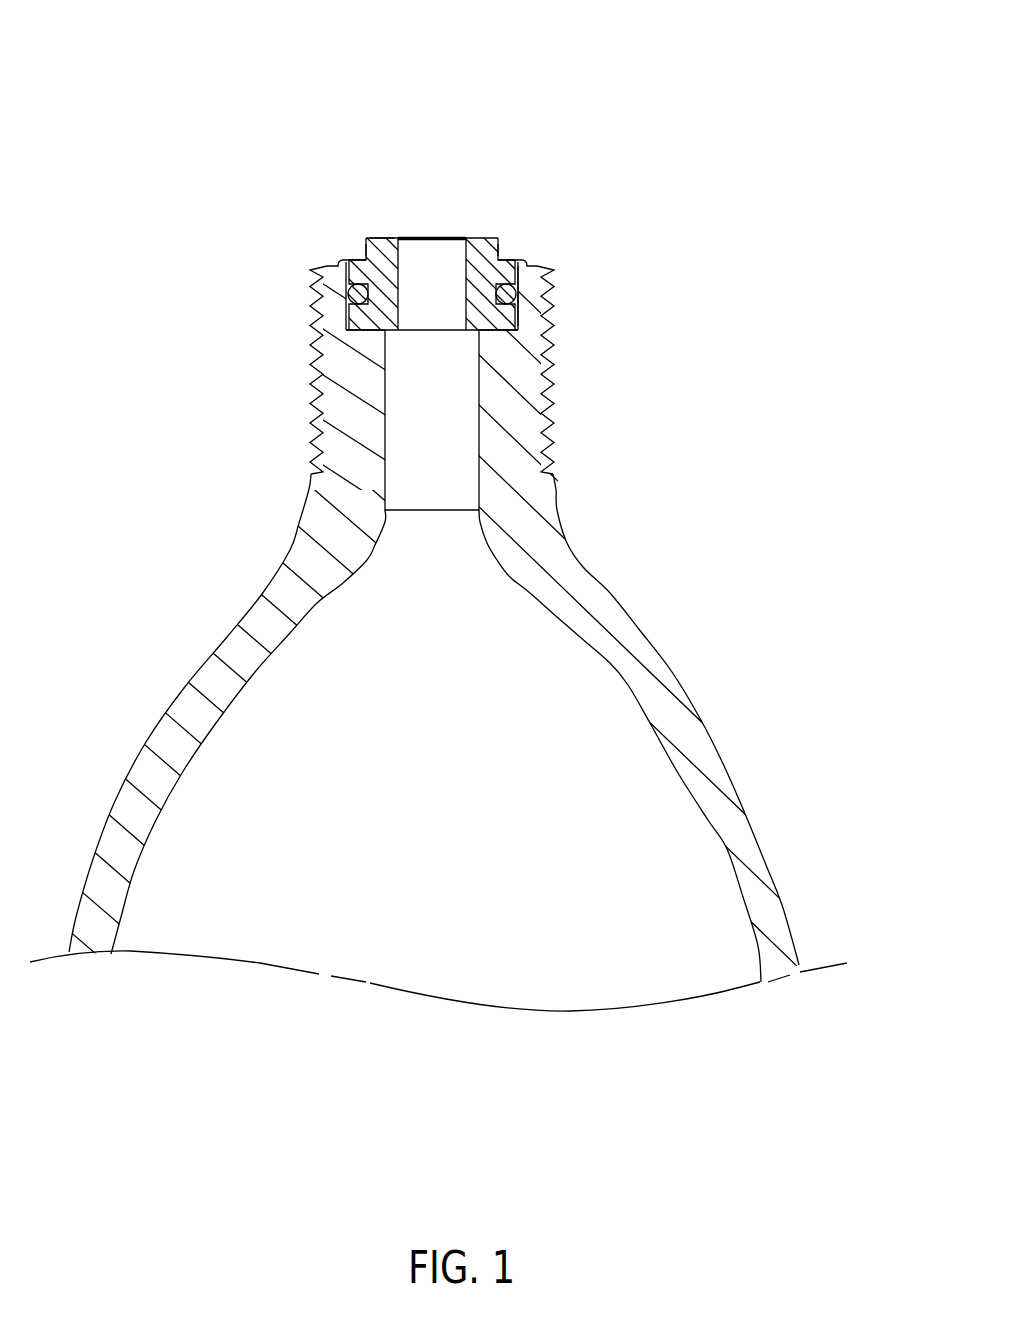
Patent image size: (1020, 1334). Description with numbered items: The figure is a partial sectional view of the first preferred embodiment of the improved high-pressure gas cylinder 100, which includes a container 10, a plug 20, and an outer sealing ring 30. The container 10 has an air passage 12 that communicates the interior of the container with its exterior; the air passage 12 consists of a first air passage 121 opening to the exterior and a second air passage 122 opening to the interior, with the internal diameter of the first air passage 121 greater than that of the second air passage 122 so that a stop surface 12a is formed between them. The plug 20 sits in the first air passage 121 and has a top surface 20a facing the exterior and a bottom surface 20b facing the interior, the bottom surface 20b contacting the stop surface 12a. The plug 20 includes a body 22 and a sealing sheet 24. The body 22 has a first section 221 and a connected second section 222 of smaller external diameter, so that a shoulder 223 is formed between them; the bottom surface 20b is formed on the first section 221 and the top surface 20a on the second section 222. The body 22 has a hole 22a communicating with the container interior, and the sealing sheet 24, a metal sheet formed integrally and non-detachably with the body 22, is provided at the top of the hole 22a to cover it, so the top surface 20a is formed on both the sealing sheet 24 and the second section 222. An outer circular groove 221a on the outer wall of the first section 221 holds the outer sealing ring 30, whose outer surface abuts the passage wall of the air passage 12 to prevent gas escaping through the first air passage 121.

The high-pressure gas cylinder 100 is at (682, 147).
The container 10 is at (645, 625).
The air passage 12 is at (707, 310).
The first air passage 121 is at (516, 318).
The second air passage 122 is at (455, 428).
The stop surface 12a is at (347, 325).
The plug 20 is at (484, 232).
The top surface 20a is at (376, 237).
The bottom surface 20b is at (502, 338).
The body 22 is at (140, 163).
The first section 221 is at (346, 276).
The outer circular groove 221a is at (517, 287).
The second section 222 is at (366, 240).
The shoulder 223 is at (362, 242).
The hole 22a is at (425, 307).
The sealing sheet 24 is at (428, 238).
The outer sealing ring 30 is at (340, 300).